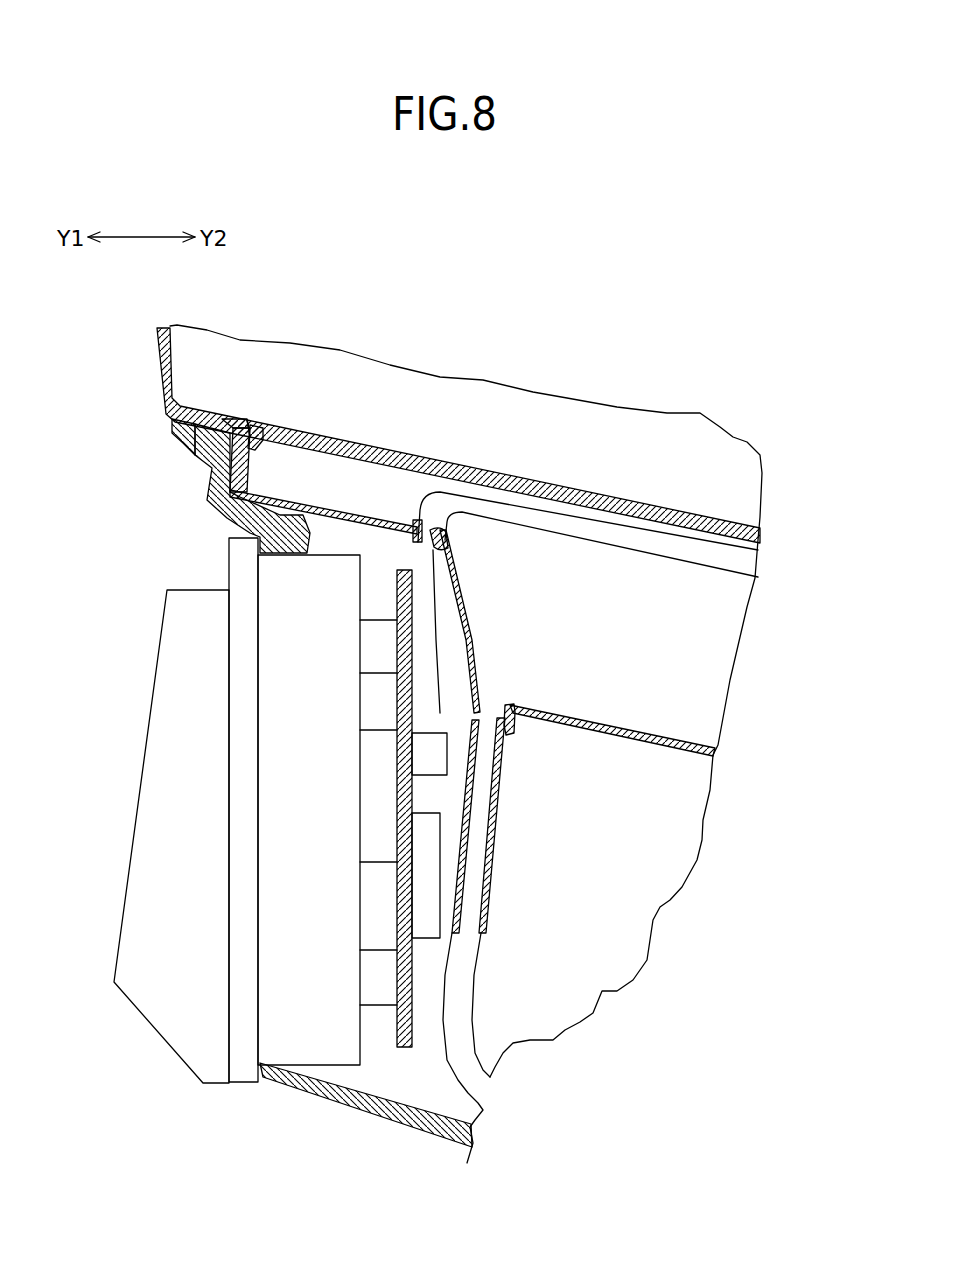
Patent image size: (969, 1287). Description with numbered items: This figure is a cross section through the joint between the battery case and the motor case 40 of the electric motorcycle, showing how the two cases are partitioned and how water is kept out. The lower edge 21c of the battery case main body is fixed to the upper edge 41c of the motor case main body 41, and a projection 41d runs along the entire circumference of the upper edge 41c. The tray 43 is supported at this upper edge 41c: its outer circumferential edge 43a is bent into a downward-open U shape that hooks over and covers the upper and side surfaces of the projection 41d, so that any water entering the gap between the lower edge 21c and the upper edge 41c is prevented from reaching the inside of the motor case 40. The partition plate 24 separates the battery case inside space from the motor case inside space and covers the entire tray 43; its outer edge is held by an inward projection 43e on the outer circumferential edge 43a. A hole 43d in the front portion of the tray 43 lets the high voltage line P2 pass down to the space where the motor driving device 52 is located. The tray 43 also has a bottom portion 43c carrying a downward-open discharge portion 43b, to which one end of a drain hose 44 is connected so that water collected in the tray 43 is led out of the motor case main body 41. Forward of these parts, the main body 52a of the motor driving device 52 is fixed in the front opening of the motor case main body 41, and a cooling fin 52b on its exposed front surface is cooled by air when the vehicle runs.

The lower edge of the battery case main body 21c is at (207, 410).
The partition plate 24 is at (500, 463).
The line P2 is at (628, 540).
The motor case 40 is at (390, 1128).
The motor case main body 41 is at (428, 1130).
The upper edge of the motor case main body 41c is at (176, 440).
The projection 41d is at (236, 437).
The tray 43 is at (615, 748).
The outer circumferential edge of the tray 43a is at (237, 423).
The discharge portion 43b is at (510, 735).
The bottom portion of the tray 43c is at (632, 748).
The hole 43d is at (445, 560).
The projection 43e is at (265, 445).
The drain hose 44 is at (478, 963).
The motor driving device 52 is at (261, 865).
The main body of the motor driving device 52a is at (288, 1047).
The cooling fin 52b is at (155, 1015).